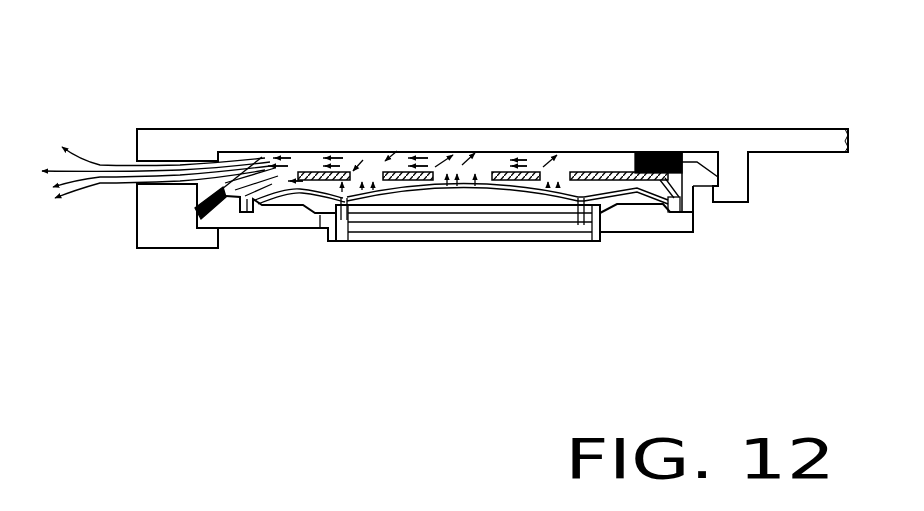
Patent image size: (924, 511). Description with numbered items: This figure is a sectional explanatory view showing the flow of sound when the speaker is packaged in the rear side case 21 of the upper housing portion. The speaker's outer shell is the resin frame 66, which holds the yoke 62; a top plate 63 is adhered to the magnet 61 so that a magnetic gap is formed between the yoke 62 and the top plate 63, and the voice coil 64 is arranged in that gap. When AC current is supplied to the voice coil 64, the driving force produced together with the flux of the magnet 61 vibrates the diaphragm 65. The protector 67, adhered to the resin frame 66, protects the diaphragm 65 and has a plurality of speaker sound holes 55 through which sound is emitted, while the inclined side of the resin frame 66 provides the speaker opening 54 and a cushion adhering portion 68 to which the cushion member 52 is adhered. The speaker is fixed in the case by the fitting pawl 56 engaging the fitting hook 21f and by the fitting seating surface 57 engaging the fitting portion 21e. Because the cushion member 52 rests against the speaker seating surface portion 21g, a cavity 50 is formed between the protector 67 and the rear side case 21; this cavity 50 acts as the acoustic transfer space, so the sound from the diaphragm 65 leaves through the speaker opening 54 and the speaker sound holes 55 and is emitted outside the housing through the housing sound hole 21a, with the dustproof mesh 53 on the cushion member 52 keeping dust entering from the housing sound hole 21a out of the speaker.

The rear side case 21 is at (780, 128).
The housing sound hole 21a is at (127, 161).
The fitting portion 21e is at (177, 248).
The fitting hook 21f is at (738, 185).
The speaker seating surface portion 21g is at (350, 165).
The cavity 50 is at (305, 168).
The cushion member 52 is at (658, 150).
The dustproof mesh 53 is at (343, 170).
The speaker opening 54 is at (244, 182).
The speaker sound holes 55 is at (566, 172).
The fitting pawl 56 is at (700, 187).
The fitting seating surface 57 is at (208, 248).
The magnet 61 is at (437, 228).
The yoke 62 is at (380, 240).
The top plate 63 is at (492, 222).
The voice coil 64 is at (583, 225).
The diaphragm 65 is at (575, 172).
The resin frame 66 is at (650, 215).
The protector 67 is at (604, 170).
The cushion adhering portion 68 is at (220, 212).